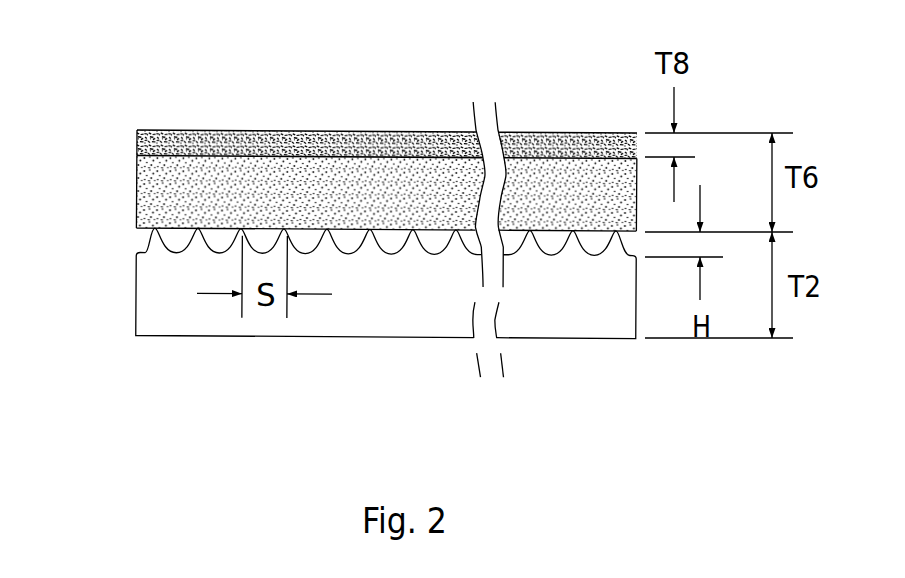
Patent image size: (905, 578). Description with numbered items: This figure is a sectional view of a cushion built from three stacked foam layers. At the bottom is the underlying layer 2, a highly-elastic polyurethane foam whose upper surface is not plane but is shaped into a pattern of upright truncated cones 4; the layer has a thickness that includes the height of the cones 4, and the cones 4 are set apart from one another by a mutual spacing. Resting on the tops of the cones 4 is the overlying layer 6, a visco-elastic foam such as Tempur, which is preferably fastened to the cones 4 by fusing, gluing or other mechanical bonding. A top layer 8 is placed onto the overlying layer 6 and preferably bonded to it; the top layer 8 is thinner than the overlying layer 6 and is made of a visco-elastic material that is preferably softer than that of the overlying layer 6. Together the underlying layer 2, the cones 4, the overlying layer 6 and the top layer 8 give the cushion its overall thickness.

The underlying layer 2 is at (163, 318).
The truncated cones 4 is at (160, 240).
The overlying layer 6 is at (150, 177).
The top layer 8 is at (140, 147).